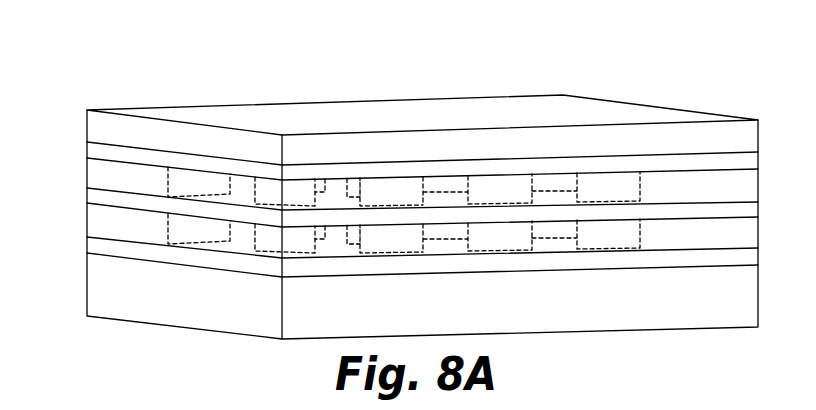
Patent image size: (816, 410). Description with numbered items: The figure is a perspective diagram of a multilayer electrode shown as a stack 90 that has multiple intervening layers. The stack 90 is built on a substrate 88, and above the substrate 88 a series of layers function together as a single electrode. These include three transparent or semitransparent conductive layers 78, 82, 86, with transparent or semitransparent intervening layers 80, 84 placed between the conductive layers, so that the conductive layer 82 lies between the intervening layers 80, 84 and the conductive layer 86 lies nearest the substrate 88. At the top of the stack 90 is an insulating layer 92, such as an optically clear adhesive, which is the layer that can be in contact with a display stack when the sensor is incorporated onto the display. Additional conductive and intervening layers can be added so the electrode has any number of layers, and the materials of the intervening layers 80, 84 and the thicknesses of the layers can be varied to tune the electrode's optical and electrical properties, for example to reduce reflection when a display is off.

The stack 90 is at (265, 68).
The insulating layer 92 is at (98, 124).
The conductive layer 78 is at (98, 150).
The intervening layer 80 is at (98, 172).
The conductive layer 82 is at (98, 197).
The intervening layer 84 is at (98, 220).
The conductive layer 86 is at (98, 245).
The substrate 88 is at (98, 287).